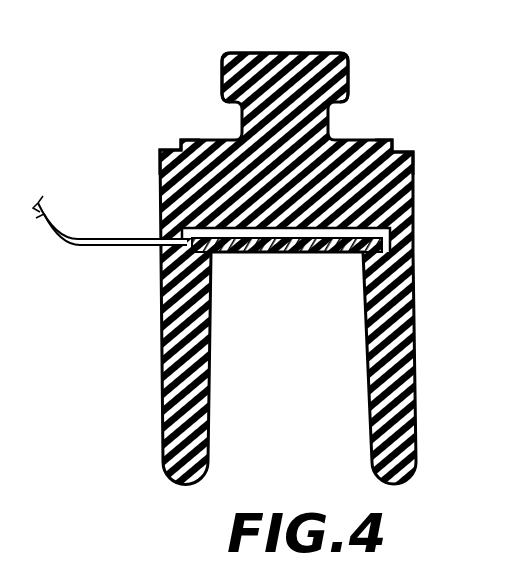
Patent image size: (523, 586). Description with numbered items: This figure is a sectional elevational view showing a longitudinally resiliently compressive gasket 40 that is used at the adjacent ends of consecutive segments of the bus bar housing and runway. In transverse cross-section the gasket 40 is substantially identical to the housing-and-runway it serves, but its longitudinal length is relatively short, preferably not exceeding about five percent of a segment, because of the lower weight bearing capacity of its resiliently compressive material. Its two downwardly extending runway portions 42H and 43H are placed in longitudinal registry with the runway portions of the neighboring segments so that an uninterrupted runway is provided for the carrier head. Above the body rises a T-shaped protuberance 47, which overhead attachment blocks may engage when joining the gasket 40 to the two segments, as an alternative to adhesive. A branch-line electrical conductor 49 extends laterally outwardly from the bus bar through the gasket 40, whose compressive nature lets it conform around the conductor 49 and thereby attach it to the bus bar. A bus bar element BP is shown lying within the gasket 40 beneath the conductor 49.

The resiliently compressive gasket 40 is at (413, 243).
The T-shaped protuberance 47 is at (222, 66).
The runway portion 42H is at (178, 150).
The runway portion 43H is at (395, 150).
The branch-line electrical conductor 49 is at (150, 238).
The base plate BP is at (312, 253).